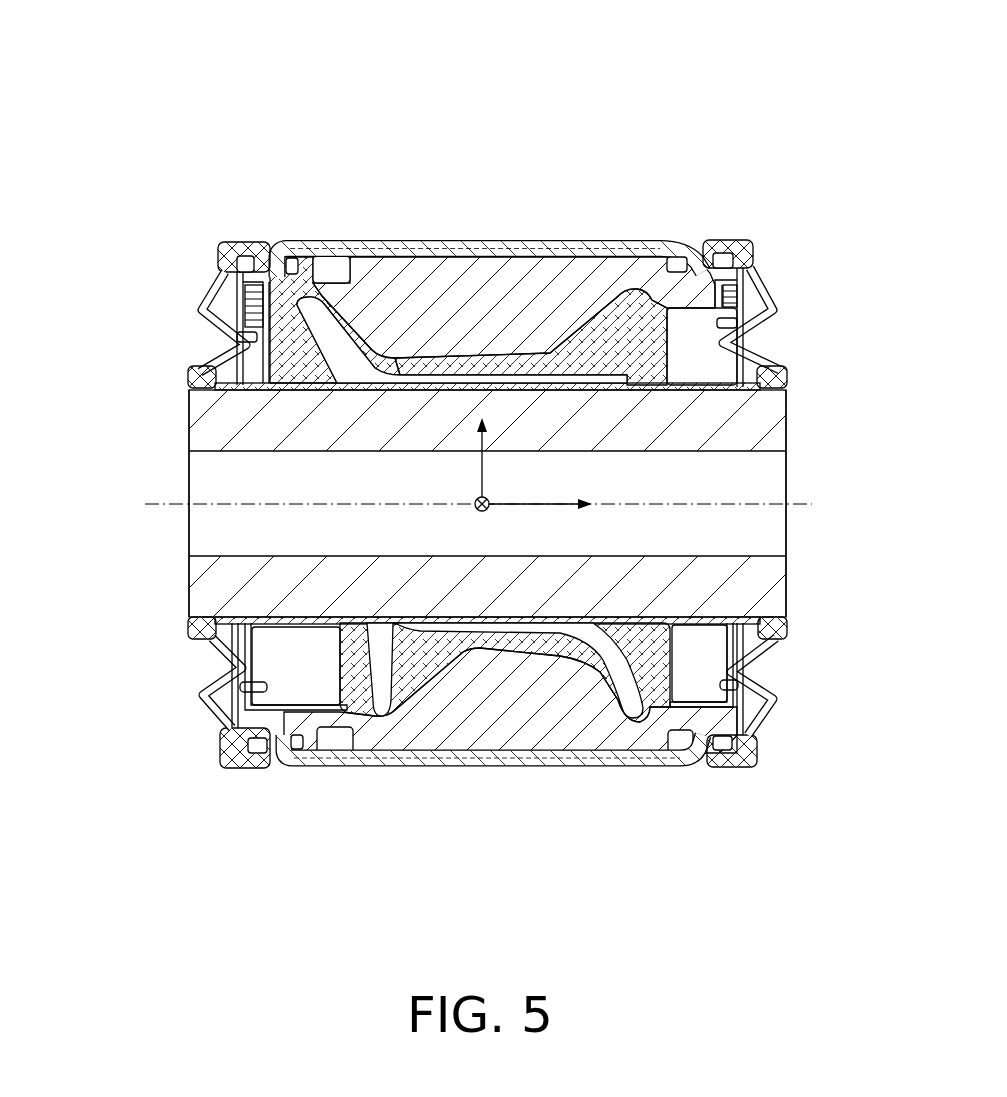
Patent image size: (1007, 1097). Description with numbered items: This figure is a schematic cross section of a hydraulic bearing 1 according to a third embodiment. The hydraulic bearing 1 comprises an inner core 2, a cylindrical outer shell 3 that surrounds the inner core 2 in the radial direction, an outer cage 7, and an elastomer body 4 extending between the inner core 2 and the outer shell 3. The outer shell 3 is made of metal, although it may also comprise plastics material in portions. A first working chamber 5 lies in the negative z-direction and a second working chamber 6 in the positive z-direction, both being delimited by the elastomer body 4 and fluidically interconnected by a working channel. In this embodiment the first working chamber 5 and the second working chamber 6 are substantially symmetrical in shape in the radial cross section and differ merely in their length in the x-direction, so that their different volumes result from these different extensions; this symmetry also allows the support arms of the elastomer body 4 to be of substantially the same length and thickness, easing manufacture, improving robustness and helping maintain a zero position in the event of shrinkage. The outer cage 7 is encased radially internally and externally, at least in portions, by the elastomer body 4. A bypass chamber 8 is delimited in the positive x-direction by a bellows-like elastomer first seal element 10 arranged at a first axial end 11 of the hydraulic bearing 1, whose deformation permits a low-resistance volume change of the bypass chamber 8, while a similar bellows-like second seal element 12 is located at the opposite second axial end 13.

The hydraulic bearing 1 is at (774, 121).
The inner core 2 is at (393, 425).
The outer shell 3 is at (500, 243).
The elastomer body 4 is at (645, 355).
The first working chamber 5 is at (398, 675).
The second working chamber 6 is at (333, 360).
The outer cage 7 is at (553, 703).
The bypass chamber 8 is at (703, 655).
The first seal element 10 is at (760, 344).
The first axial end 11 is at (788, 490).
The second seal element 12 is at (188, 377).
The second axial end 13 is at (188, 478).